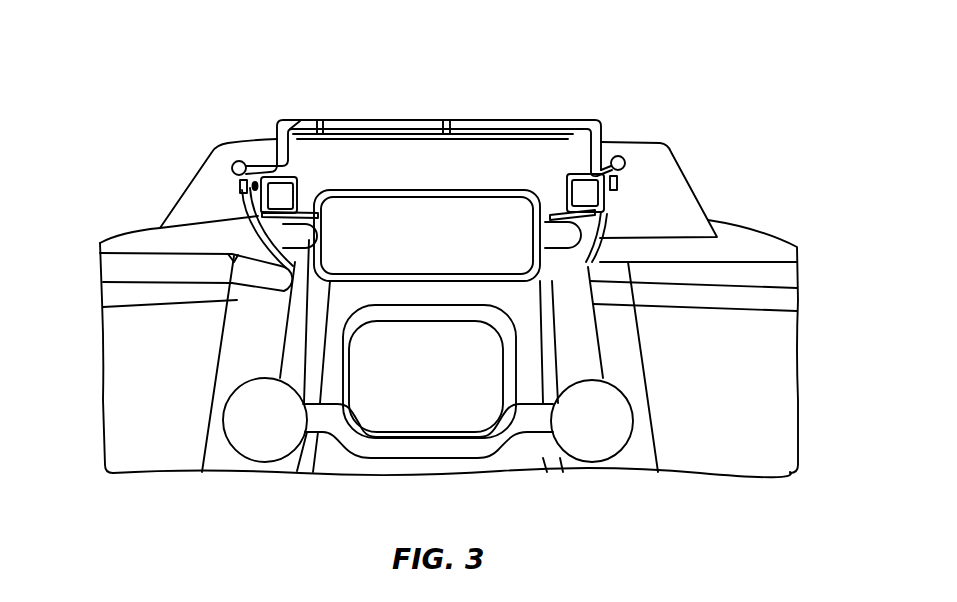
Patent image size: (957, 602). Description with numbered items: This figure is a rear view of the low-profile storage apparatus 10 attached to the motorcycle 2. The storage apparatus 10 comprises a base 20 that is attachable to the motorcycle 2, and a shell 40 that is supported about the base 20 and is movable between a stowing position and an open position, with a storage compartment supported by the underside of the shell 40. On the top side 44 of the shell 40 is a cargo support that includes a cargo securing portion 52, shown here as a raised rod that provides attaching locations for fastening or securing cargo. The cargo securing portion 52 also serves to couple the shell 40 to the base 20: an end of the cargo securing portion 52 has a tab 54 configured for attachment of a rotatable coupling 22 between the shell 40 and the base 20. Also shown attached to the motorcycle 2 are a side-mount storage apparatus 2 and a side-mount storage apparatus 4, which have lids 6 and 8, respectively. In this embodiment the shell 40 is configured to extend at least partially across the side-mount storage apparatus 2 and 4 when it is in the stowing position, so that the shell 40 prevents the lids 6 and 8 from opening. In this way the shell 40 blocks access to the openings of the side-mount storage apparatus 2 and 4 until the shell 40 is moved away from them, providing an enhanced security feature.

The low-profile storage apparatus 10 is at (346, 60).
The side-mount storage apparatus 2 is at (145, 368).
The side-mount storage apparatus 4 is at (765, 382).
The lid 6 is at (143, 273).
The lid 8 is at (767, 275).
The base 20 is at (243, 198).
The rotatable coupling 22 is at (240, 185).
The shell 40 is at (647, 143).
The top side 44 is at (303, 128).
The cargo securing portion 52 is at (500, 120).
The tab 54 is at (236, 170).